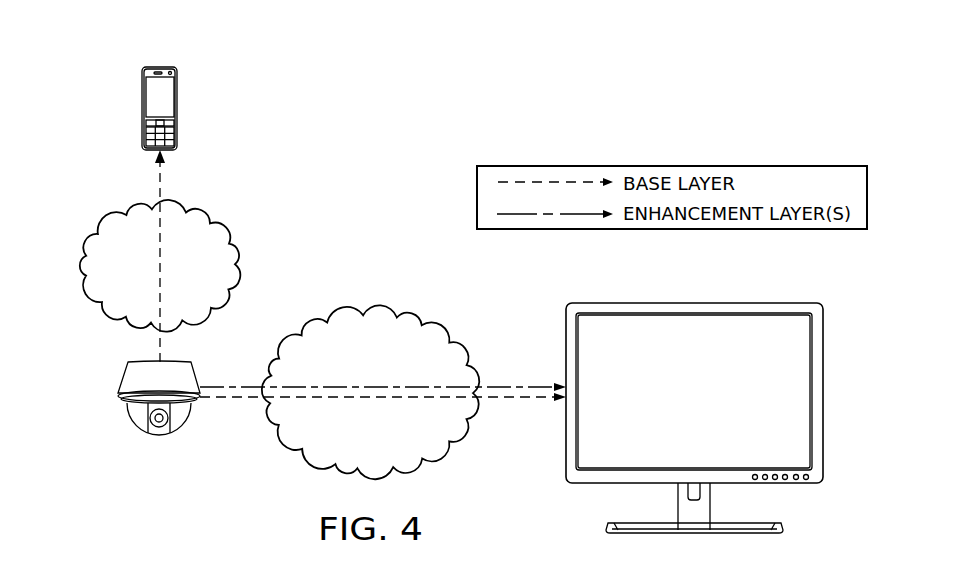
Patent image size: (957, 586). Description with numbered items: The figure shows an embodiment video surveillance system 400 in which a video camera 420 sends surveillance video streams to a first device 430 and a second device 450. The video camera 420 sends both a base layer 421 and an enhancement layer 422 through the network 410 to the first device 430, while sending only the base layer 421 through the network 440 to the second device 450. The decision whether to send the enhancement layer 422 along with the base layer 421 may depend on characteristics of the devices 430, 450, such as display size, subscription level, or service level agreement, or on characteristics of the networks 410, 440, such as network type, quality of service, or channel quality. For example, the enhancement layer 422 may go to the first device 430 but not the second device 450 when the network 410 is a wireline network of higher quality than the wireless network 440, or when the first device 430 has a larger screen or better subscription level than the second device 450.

The video surveillance system 400 is at (93, 64).
The network 410 is at (371, 302).
The video camera 420 is at (137, 427).
The base layer 421 is at (162, 170).
The enhancement layer 422 is at (508, 385).
The first device 430 is at (693, 303).
The network 440 is at (118, 213).
The second device 450 is at (142, 108).